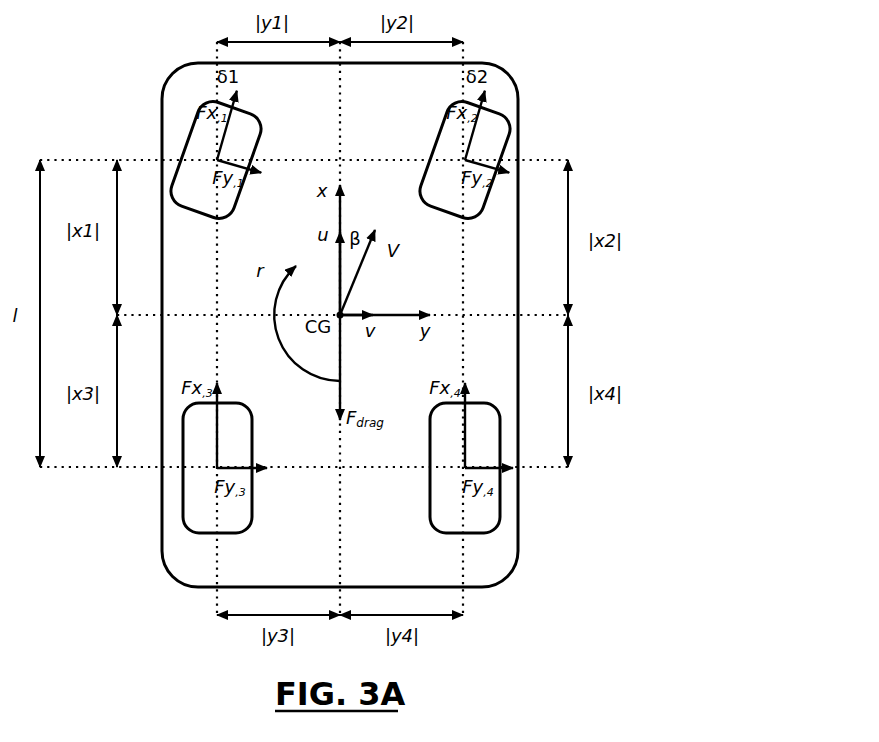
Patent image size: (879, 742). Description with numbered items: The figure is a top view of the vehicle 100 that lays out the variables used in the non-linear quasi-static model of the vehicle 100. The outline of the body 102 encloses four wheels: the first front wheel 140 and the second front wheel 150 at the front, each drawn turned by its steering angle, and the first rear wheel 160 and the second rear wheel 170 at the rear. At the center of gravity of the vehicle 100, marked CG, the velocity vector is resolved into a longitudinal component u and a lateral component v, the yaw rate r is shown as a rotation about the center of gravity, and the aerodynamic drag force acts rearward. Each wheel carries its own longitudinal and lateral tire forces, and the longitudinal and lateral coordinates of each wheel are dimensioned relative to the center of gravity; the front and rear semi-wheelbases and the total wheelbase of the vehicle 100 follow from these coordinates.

The vehicle 100 is at (409, 318).
The body 102 is at (165, 572).
The first front wheel 140 is at (202, 96).
The second front wheel 150 is at (507, 104).
The first rear wheel 160 is at (183, 513).
The second rear wheel 170 is at (500, 510).